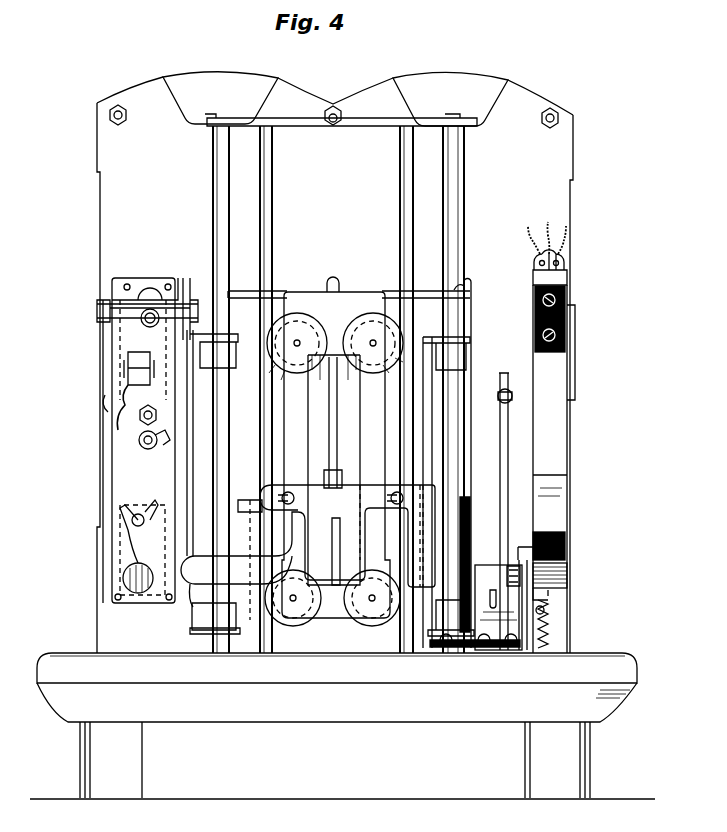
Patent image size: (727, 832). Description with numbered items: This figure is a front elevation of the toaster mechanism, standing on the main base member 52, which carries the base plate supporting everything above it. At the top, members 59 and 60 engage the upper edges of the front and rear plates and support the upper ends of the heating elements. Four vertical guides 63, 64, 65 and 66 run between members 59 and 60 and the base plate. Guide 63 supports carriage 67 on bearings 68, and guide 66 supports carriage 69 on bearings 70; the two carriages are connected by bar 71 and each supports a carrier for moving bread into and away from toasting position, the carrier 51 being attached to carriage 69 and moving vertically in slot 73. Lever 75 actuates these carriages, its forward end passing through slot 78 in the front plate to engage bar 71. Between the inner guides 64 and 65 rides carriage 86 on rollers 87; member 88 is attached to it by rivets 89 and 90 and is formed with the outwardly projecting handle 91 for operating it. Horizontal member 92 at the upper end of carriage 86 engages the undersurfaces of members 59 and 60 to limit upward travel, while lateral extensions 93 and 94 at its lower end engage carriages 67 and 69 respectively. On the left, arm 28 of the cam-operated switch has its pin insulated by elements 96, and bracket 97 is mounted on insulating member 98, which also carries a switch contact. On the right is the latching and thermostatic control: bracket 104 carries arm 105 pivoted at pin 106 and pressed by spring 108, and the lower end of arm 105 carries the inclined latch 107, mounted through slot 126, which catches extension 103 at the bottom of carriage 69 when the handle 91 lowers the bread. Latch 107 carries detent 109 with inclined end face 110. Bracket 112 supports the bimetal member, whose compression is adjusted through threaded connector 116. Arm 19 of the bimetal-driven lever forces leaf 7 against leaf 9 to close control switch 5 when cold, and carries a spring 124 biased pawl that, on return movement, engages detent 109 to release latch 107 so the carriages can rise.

The member 60 is at (232, 82).
The member 59 is at (465, 80).
The vertical guide 63 is at (212, 173).
The vertical guide 64 is at (266, 212).
The vertical guide 65 is at (400, 179).
The vertical guide 66 is at (456, 202).
The horizontal member 92 is at (247, 290).
The arm 28 is at (118, 470).
The insulating elements 96 is at (118, 300).
The bracket 97 is at (140, 448).
The insulating member 98 is at (147, 604).
The carriage 67 is at (197, 446).
The bearings 68 is at (232, 362).
The rollers 87 is at (282, 320).
The slot 78 is at (332, 276).
The carriage 86 is at (365, 300).
The lever 75 is at (334, 470).
The carriage 69 is at (423, 400).
The bearings 70 is at (462, 356).
The slot 73 is at (471, 284).
The carrier 51 is at (465, 498).
The bracket 104 is at (508, 380).
The arm 105 is at (500, 410).
The pin 106 is at (513, 398).
The leaf 9 is at (558, 438).
The control switch 5 is at (562, 299).
The leaf 7 is at (548, 516).
The inclined end face 110 is at (545, 535).
The detent 109 is at (510, 547).
The bracket 112 is at (562, 572).
The spring 124 is at (550, 592).
The threaded connector 116 is at (548, 642).
The arm 19 is at (523, 640).
The inclined latch 107 is at (484, 565).
The slot 126 is at (493, 577).
The extension 103 is at (440, 644).
The spring 108 is at (468, 650).
The member 88 is at (360, 500).
The rivet 90 is at (290, 506).
The rivet 89 is at (398, 506).
The handle 91 is at (332, 560).
The lateral extension 94 is at (428, 570).
The bar 71 is at (247, 500).
The lateral extension 93 is at (186, 598).
The main base member 52 is at (610, 668).